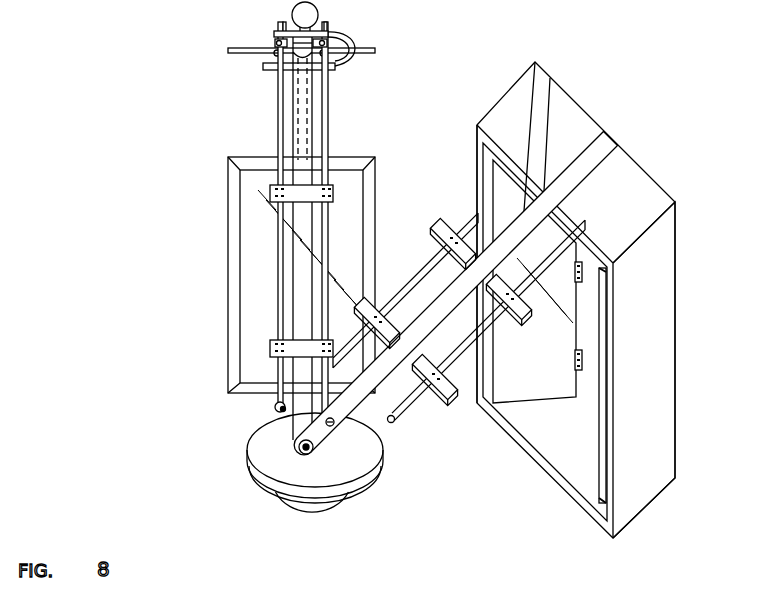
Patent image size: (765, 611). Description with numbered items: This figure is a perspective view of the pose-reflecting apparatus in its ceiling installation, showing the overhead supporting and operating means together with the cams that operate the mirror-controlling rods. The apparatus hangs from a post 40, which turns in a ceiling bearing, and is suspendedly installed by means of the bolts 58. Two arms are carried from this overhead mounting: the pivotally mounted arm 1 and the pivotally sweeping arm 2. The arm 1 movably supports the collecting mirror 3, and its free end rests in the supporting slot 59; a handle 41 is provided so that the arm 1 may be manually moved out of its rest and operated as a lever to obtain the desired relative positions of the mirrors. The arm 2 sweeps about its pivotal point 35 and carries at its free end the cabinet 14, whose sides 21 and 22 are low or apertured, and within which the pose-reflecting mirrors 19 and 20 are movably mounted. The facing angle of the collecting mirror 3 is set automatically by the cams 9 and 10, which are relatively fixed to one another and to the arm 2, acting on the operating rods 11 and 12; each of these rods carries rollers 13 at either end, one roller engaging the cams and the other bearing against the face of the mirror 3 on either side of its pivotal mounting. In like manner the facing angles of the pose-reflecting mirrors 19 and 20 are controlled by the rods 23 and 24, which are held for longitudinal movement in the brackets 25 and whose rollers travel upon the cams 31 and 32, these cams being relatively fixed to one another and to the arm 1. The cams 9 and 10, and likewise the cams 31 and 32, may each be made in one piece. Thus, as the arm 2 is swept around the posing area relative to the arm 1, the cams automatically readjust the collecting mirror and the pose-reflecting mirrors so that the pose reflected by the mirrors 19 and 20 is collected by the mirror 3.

The pivotally mounted arm 1 is at (293, 122).
The pivotally sweeping arm 2 is at (447, 316).
The collecting mirror 3 is at (375, 182).
The cam 9 is at (383, 455).
The cam 10 is at (378, 470).
The operating rod 11 is at (276, 95).
The operating rod 12 is at (330, 108).
The rollers 13 is at (272, 407).
The cabinet 14 is at (677, 252).
The pose-reflecting mirror 19 is at (530, 387).
The pose-reflecting mirror 20 is at (603, 477).
The side of cabinet 21 is at (472, 162).
The side of cabinet 22 is at (644, 370).
The rod 23 is at (425, 268).
The rod 24 is at (415, 402).
The brackets 25 is at (453, 393).
The cam 31 is at (373, 487).
The cam 32 is at (337, 512).
The pivotal point 35 is at (299, 447).
The post 40 is at (308, 444).
The handle 41 is at (291, 13).
The bolts 58 is at (330, 18).
The supporting slot 59 is at (352, 38).